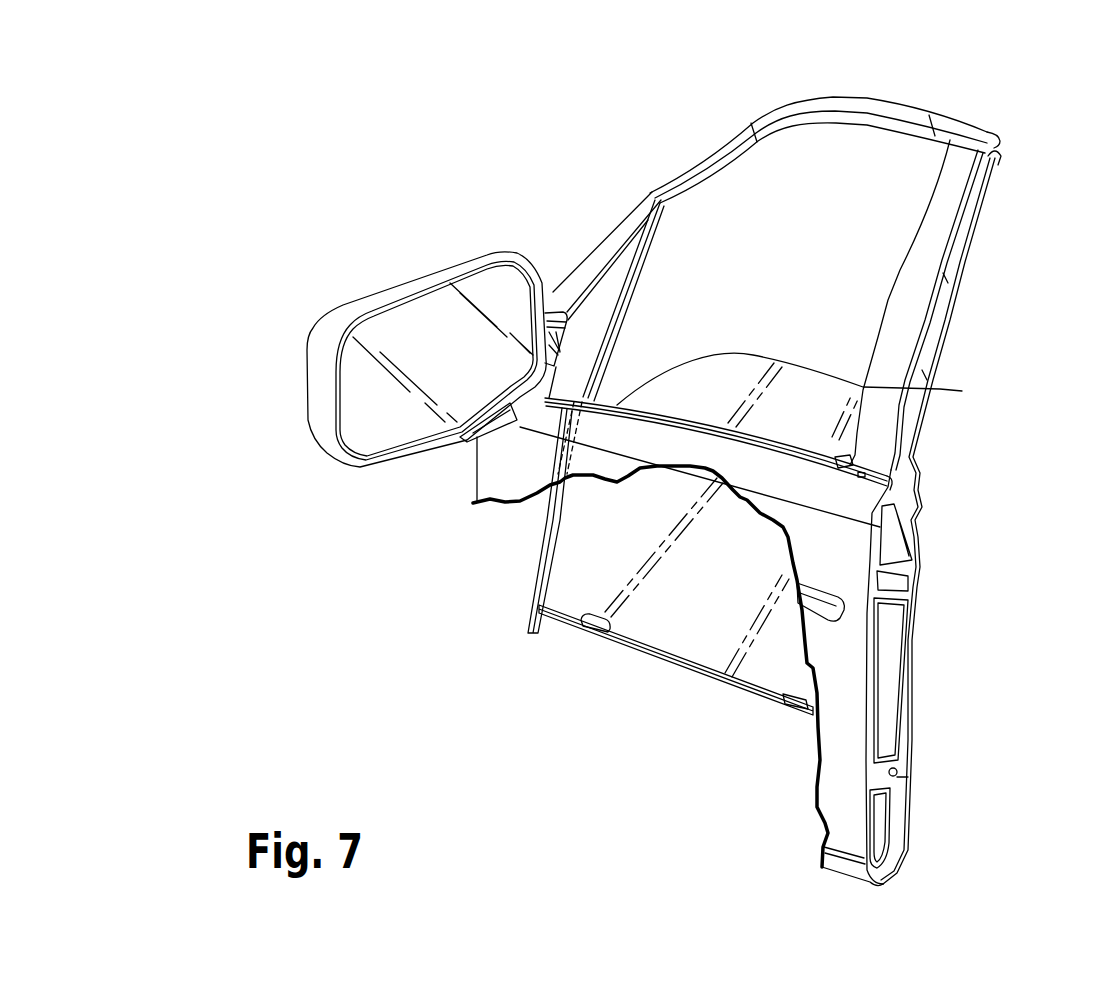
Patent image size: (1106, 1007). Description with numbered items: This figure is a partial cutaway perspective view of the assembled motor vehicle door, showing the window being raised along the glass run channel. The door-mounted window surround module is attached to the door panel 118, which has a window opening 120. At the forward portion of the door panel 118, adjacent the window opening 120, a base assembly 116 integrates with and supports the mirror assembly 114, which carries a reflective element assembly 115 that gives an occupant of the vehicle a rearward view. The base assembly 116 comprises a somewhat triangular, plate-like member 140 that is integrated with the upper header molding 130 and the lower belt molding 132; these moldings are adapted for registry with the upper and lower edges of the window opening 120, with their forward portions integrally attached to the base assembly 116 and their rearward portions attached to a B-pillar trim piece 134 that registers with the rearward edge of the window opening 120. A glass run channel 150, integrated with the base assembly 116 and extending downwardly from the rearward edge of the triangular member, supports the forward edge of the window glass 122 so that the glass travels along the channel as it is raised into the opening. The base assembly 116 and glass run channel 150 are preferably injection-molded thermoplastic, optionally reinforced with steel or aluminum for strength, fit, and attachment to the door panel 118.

The mirror assembly 114 is at (317, 312).
The reflective element assembly 115 is at (367, 420).
The base assembly 116 is at (562, 305).
The door panel 118 is at (933, 486).
The window opening 120 is at (770, 286).
The window glass 122 is at (663, 617).
The upper header molding 130 is at (770, 110).
The lower belt molding 132 is at (754, 435).
The B-pillar trim piece 134 is at (922, 262).
The plate-like member 140 is at (578, 353).
The glass run channel 150 is at (625, 288).